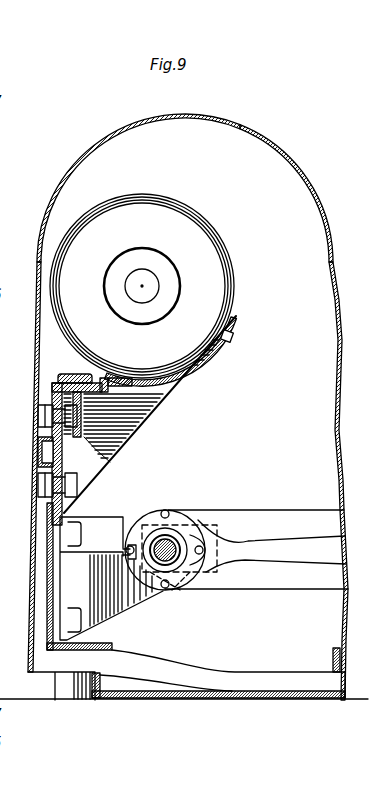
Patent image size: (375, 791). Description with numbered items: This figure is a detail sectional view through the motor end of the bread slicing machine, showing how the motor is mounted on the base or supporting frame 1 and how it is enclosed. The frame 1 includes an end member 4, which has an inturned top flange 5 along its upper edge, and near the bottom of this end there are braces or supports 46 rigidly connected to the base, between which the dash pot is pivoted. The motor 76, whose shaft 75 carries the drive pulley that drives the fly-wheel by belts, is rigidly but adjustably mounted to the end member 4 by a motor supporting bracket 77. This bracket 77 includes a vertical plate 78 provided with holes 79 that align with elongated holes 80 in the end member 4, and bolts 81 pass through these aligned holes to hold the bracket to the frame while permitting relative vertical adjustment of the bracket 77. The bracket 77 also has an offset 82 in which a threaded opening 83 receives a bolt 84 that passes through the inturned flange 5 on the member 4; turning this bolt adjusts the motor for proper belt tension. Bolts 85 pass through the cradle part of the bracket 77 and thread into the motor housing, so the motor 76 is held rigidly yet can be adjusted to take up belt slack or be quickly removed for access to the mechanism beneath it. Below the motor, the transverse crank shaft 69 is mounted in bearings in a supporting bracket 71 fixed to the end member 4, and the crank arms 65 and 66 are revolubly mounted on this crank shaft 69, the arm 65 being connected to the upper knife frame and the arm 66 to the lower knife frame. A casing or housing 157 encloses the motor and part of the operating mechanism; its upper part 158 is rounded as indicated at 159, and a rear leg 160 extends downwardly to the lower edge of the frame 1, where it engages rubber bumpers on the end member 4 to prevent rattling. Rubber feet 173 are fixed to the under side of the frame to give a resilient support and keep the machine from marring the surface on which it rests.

The base or supporting frame 1 is at (38, 607).
The end member 4 is at (45, 557).
The inturned top flange 5 is at (63, 381).
The braces or supports 46 is at (240, 672).
The crank arm 65 is at (275, 512).
The crank arm 66 is at (295, 577).
The crank shaft 69 is at (152, 573).
The supporting bracket 71 is at (95, 547).
The motor shaft 75 is at (145, 276).
The motor 76 is at (213, 226).
The motor supporting bracket 77 is at (181, 382).
The vertical plate 78 is at (58, 456).
The holes 79 is at (63, 440).
The elongated holes 80 is at (43, 402).
The bolts 81 is at (38, 410).
The offset 82 is at (128, 421).
The threaded opening 83 is at (107, 378).
The bolt 84 is at (85, 373).
The bolts 85 is at (232, 345).
The casing or housing 157 is at (325, 212).
The upper part of housing 158 is at (268, 140).
The rounded portion 159 is at (198, 117).
The rear leg 160 is at (32, 542).
The rubber feet 173 is at (75, 688).